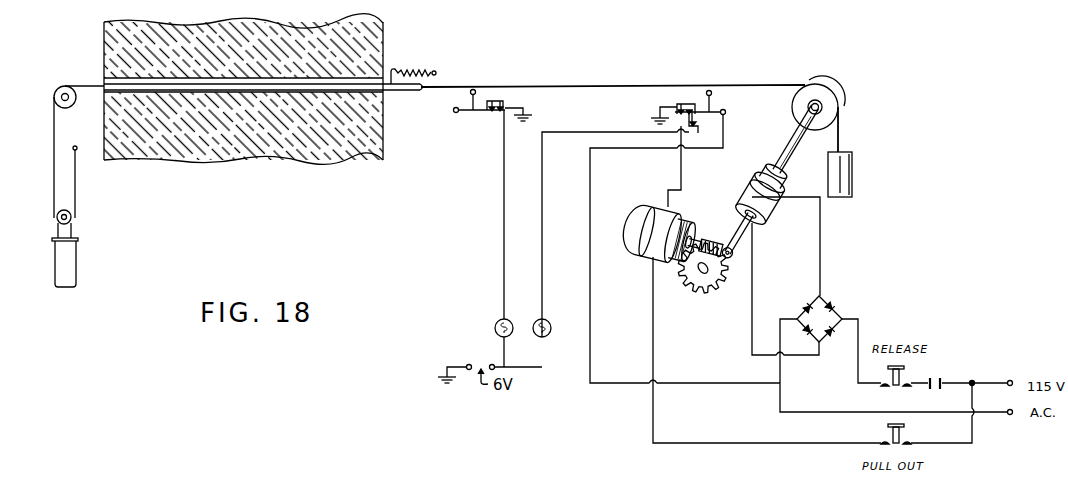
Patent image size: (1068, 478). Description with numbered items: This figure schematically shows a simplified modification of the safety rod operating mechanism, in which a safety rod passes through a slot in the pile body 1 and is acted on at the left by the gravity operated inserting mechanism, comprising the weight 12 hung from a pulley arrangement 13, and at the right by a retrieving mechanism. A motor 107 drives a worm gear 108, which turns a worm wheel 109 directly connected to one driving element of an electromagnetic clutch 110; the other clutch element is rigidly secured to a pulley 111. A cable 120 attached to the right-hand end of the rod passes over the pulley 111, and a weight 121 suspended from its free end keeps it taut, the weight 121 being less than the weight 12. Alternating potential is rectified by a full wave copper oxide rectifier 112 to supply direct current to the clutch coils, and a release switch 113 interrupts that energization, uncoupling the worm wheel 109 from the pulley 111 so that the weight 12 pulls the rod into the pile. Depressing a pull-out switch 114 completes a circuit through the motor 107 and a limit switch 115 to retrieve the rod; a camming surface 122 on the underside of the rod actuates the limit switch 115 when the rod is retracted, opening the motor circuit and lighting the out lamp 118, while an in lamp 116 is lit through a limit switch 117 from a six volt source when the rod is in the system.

The wall block 1 is at (98, 38).
The weight 12 is at (77, 266).
The pulley 13 is at (53, 146).
The motor 107 is at (643, 256).
The worm gear 108 is at (733, 247).
The worm wheel 109 is at (707, 298).
The electromagnetic clutch 110 is at (748, 173).
The pulley 111 is at (833, 111).
The full wave copper oxide rectifier 112 is at (833, 311).
The release switch 113 is at (902, 380).
The pull-out switch 114 is at (903, 437).
The limit switch 115 is at (720, 110).
The in lamp 116 is at (498, 321).
The limit switch 117 is at (467, 113).
The out lamp 118 is at (546, 321).
The cable 120 is at (648, 86).
The weight 121 is at (853, 172).
The camming surface 122 is at (384, 93).